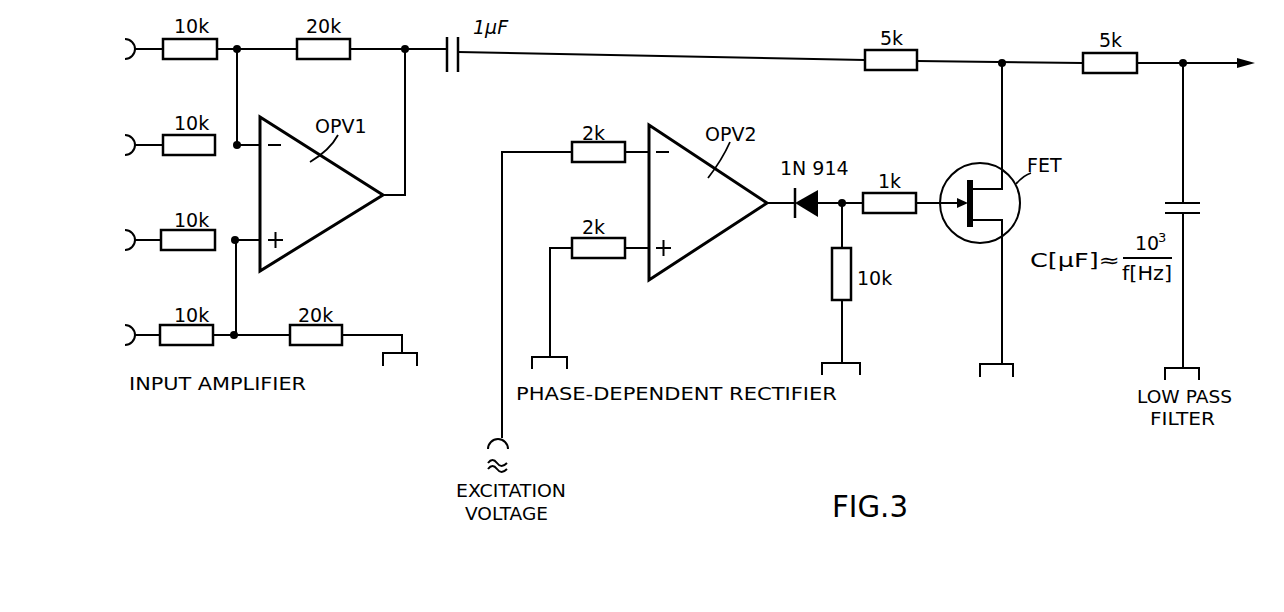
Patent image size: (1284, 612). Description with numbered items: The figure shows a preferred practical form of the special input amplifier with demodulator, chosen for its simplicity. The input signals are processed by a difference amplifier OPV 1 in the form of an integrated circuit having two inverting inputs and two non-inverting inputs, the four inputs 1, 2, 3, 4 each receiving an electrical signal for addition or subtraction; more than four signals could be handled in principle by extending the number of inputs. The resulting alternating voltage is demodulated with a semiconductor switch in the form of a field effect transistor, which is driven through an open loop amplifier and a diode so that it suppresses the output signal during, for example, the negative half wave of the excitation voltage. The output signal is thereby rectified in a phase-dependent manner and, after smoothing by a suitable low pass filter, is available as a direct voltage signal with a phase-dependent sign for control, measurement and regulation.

The input 1 is at (132, 50).
The input 2 is at (131, 146).
The input 3 is at (129, 241).
The input 4 is at (128, 336).